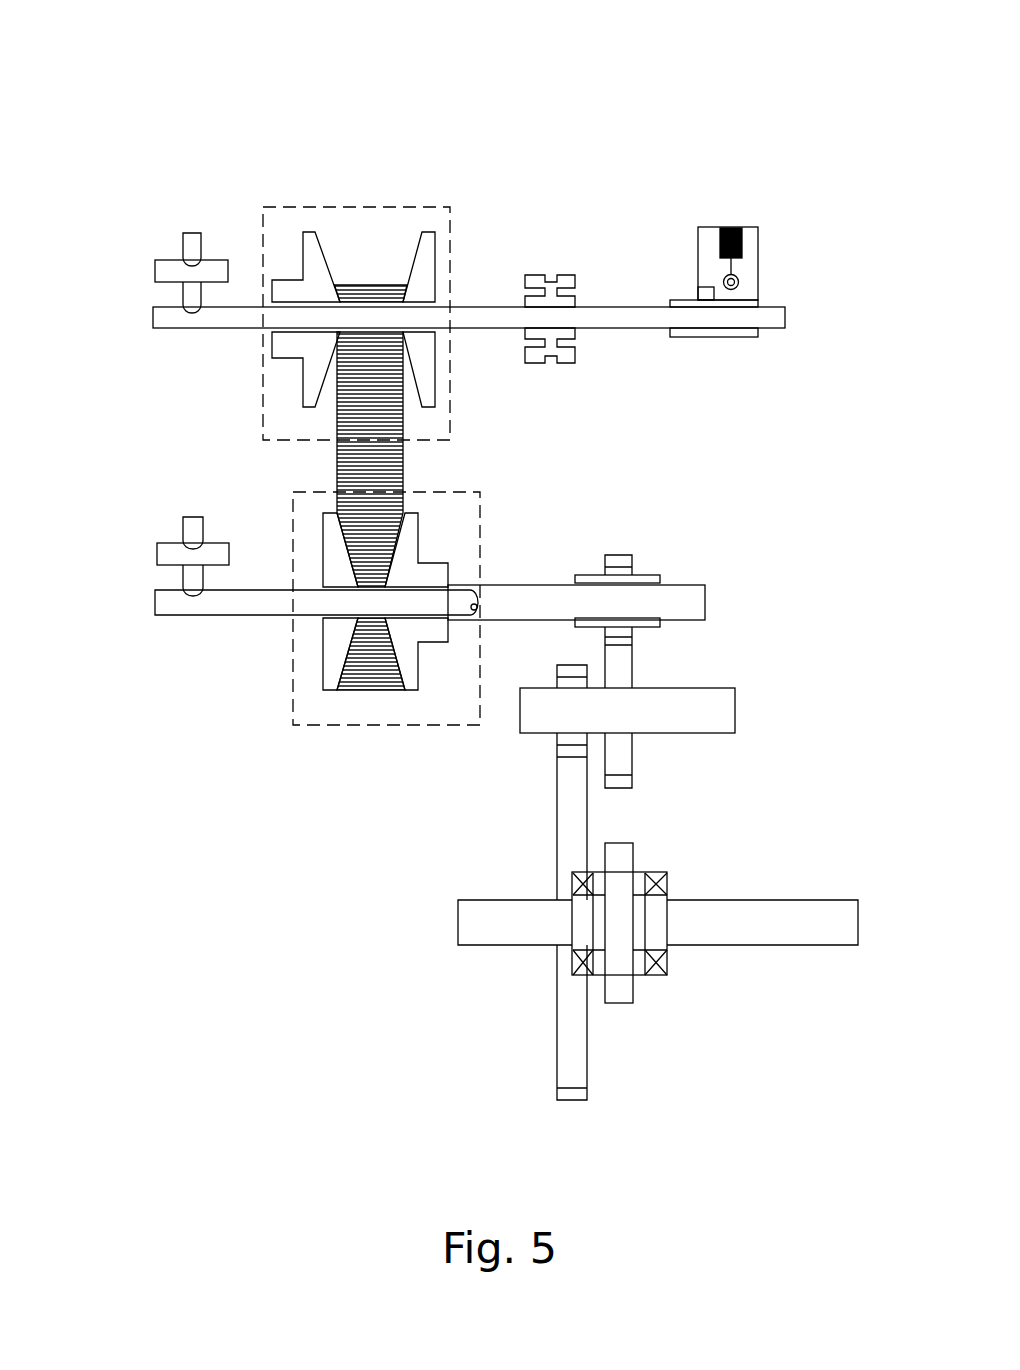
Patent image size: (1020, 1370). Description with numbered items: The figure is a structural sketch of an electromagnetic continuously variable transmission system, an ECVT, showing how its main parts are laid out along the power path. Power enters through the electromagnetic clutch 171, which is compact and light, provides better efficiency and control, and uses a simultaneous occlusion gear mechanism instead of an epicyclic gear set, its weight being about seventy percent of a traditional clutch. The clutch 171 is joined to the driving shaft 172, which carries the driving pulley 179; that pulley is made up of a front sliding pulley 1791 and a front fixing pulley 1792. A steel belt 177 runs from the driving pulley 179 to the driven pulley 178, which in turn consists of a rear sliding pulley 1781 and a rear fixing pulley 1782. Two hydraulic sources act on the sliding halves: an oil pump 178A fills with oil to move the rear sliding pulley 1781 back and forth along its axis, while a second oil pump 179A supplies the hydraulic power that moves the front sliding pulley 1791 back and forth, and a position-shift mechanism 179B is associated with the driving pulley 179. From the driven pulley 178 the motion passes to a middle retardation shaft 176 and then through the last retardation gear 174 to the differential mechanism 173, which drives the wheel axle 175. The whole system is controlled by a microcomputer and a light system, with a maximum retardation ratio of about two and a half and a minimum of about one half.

The electromagnetic clutch 171 is at (758, 245).
The driving shaft 172 is at (785, 317).
The differential mechanism 173 is at (667, 962).
The last retardation gear 174 is at (558, 1098).
The wheel axle 175 is at (458, 922).
The middle retardation shaft 176 is at (737, 713).
The steel belt 177 is at (407, 473).
The driven pulley 178 is at (271, 650).
The rear sliding pulley 1781 is at (408, 690).
The rear fixing pulley 1782 is at (325, 672).
The oil pump 178A is at (155, 553).
The driving pulley 179 is at (362, 221).
The front sliding pulley 1791 is at (308, 232).
The front fixing pulley 1792 is at (430, 232).
The oil pump 179A is at (155, 272).
The position-shift mechanism 179B is at (535, 272).